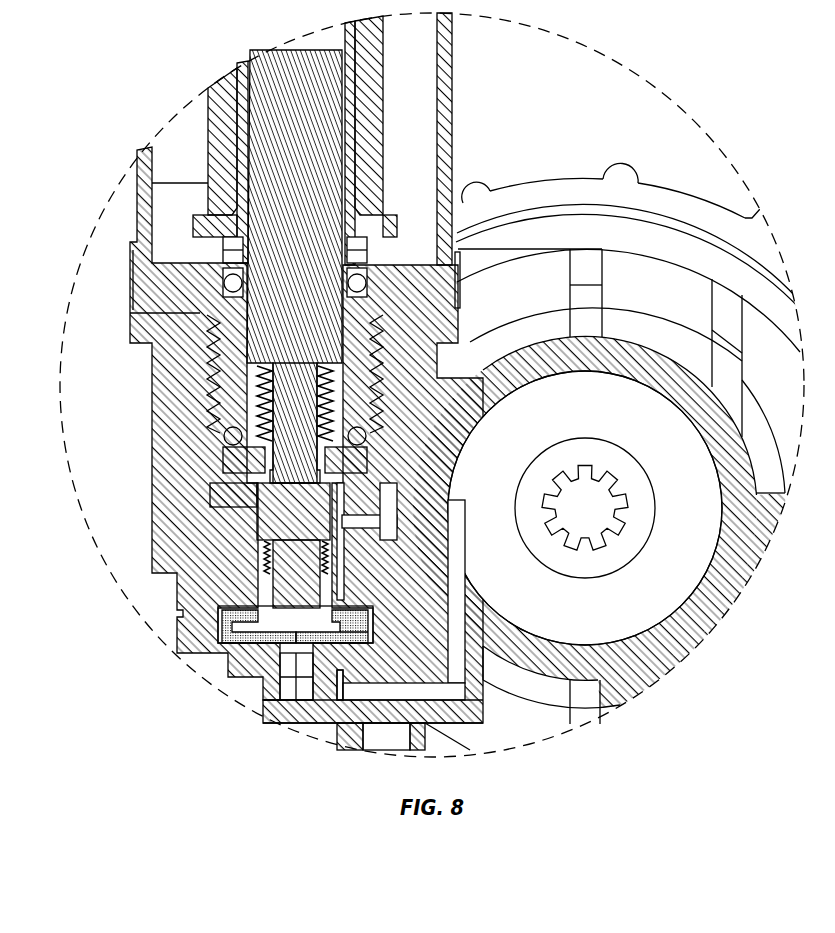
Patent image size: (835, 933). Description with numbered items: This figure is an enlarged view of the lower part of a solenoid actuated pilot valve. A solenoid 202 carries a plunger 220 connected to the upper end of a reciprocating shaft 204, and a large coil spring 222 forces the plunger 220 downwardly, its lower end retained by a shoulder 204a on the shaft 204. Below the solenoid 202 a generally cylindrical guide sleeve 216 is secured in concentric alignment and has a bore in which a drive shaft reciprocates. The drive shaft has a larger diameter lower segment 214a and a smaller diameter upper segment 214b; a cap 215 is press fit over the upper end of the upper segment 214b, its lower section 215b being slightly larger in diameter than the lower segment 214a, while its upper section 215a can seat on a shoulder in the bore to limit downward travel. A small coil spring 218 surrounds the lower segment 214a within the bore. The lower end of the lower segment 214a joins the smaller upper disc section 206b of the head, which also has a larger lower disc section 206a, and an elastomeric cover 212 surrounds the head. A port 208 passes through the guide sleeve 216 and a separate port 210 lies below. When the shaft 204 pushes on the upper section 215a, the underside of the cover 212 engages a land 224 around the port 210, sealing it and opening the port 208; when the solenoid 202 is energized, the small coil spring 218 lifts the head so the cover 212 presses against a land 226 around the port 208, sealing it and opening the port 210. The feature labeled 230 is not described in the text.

The solenoid 202 is at (383, 85).
The plunger 220 is at (294, 266).
The large coil spring 222 is at (262, 382).
The shoulder 204a is at (240, 450).
The reciprocating shaft 204 is at (295, 423).
The upper section of the cap 215a is at (255, 468).
The cap 215 is at (280, 497).
The lower section of the cap 215b is at (260, 512).
The small coil spring 218 is at (262, 548).
The guide sleeve 216 is at (200, 560).
The lower segment of the drive shaft 214a is at (296, 574).
The upper segment of the drive shaft 214b is at (380, 467).
The upper disc section 206b is at (295, 623).
The elastomeric cover 212 is at (230, 618).
The lower disc section 206a is at (250, 634).
The land 224 is at (290, 641).
The port 210 is at (292, 652).
The vent passage 230 is at (340, 672).
The port 208 is at (447, 528).
The land 226 is at (440, 562).